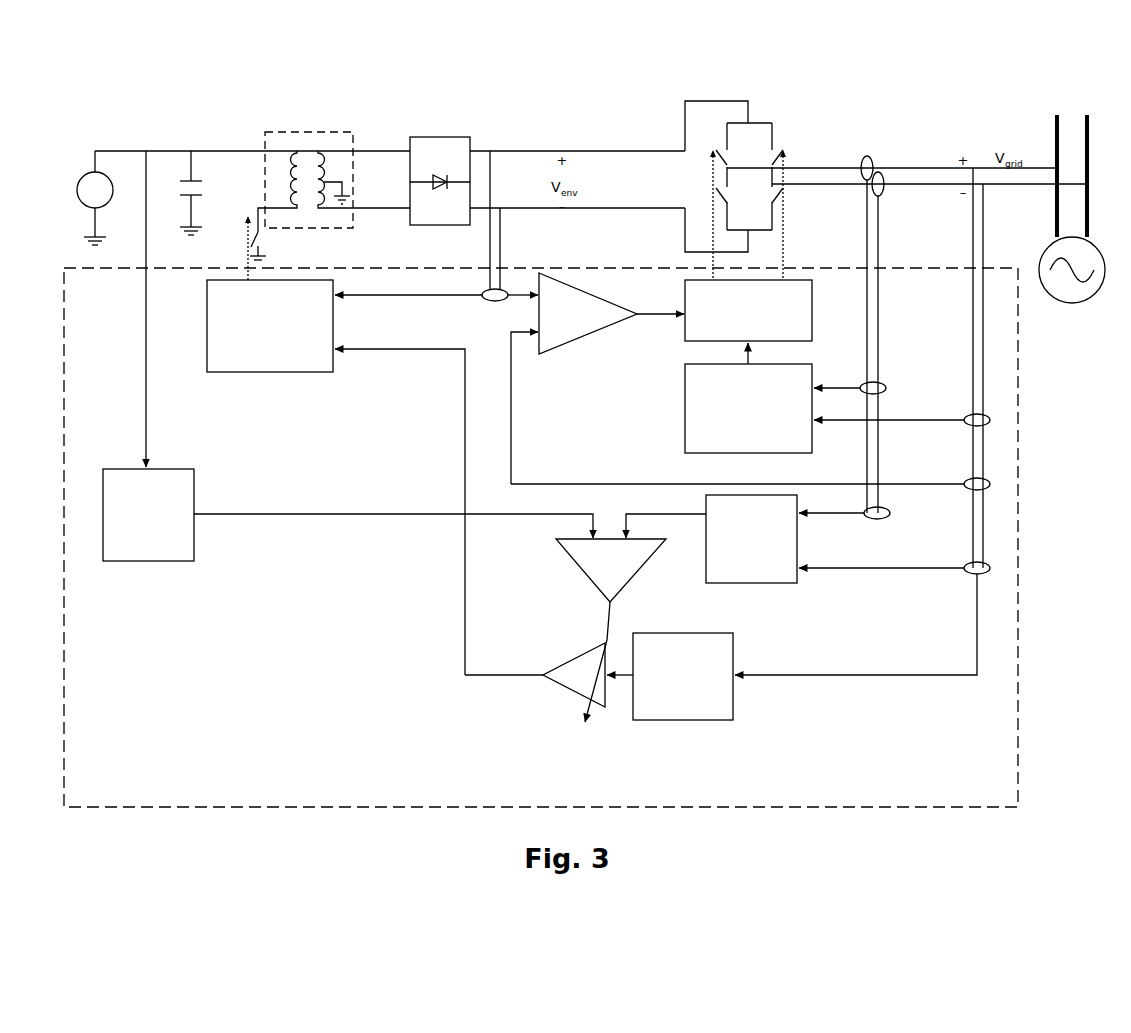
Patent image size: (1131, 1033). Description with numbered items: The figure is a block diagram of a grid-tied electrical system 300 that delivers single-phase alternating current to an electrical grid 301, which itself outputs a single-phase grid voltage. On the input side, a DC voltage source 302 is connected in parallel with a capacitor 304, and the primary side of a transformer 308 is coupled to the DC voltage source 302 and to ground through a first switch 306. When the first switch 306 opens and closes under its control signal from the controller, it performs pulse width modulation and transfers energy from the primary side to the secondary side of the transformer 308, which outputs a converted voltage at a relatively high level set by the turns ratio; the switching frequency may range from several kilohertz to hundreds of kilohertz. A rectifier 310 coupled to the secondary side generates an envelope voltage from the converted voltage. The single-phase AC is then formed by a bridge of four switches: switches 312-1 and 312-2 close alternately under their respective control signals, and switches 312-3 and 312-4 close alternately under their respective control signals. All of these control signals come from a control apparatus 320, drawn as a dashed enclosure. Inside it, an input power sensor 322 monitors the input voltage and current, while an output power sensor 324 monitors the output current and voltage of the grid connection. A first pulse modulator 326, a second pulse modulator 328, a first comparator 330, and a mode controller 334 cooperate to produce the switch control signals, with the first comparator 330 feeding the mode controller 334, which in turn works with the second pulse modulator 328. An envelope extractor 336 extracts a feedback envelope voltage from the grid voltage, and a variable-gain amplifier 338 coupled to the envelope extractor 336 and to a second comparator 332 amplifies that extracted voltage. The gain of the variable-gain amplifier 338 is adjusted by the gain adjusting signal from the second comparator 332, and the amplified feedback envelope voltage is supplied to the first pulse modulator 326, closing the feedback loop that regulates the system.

The grid-tied electrical system 300 is at (558, 44).
The electrical grid 301 is at (1078, 232).
The direct current (DC) voltage source 302 is at (120, 171).
The capacitor 304 is at (216, 166).
The first switch 306 is at (284, 248).
The transformer 308 is at (334, 165).
The rectifier 310 is at (445, 162).
The switch 312-1 is at (700, 166).
The switch 312-2 is at (671, 222).
The switch 312-3 is at (804, 196).
The switch 312-4 is at (806, 225).
The control apparatus 320 is at (572, 537).
The input power sensor 322 is at (348, 509).
The output power sensor 324 is at (711, 558).
The first pulse modulator 326 is at (336, 477).
The second pulse modulator 328 is at (729, 398).
The first comparator 330 is at (597, 378).
The second comparator 332 is at (605, 589).
The mode controller 334 is at (729, 326).
The envelope extractor 336 is at (700, 690).
The variable-gain amplifier 338 is at (536, 686).